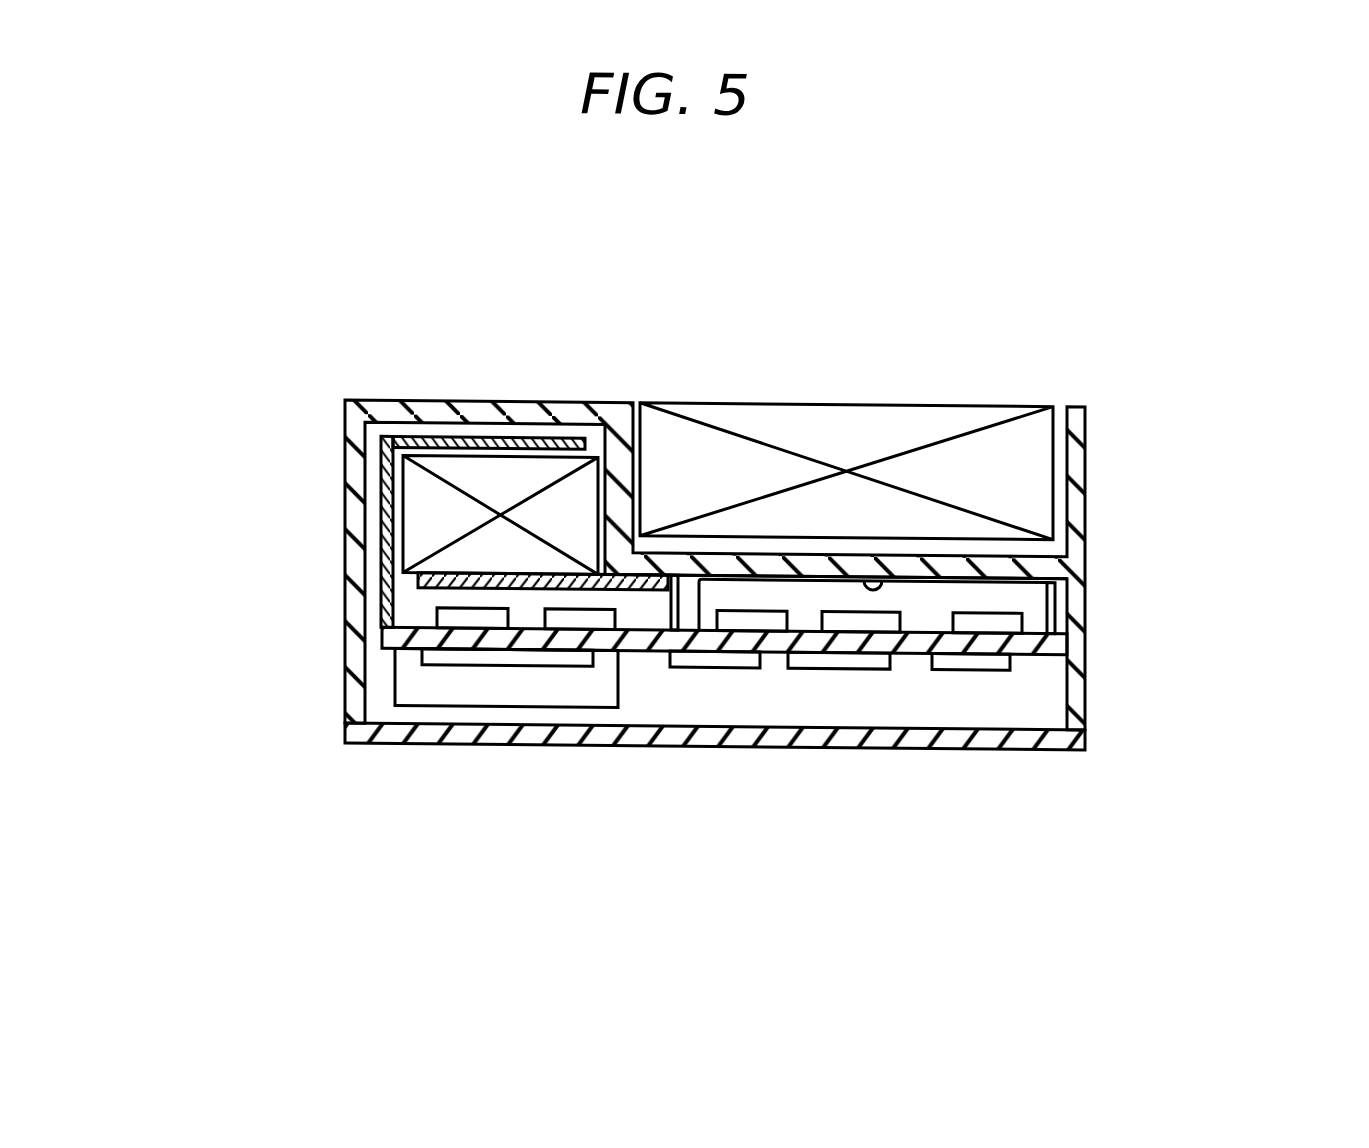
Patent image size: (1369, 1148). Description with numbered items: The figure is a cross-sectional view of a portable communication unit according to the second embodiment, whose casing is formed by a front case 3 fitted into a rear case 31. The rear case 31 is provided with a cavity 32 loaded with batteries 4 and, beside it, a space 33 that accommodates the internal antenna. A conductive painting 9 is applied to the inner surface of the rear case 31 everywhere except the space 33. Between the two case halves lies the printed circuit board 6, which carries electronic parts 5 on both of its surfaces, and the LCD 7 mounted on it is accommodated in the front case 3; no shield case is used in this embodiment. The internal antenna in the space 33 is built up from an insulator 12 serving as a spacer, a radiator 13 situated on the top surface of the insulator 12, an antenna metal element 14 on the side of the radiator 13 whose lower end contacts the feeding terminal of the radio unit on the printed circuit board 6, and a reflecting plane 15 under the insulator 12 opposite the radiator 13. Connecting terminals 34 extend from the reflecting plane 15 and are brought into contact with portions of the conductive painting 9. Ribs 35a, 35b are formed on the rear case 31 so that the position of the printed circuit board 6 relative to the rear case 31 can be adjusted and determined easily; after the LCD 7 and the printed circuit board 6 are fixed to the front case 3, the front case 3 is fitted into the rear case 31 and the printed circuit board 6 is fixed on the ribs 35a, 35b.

The front case 3 is at (1053, 735).
The batteries 4 is at (1012, 449).
The electronic parts 5 is at (547, 611).
The printed circuit board 6 is at (657, 637).
The liquid crystal display 7 is at (577, 690).
The conductive painting 9 is at (885, 571).
The insulator 12 is at (422, 481).
The radiator 13 is at (484, 434).
The antenna metal element 14 is at (380, 539).
The reflecting plate 15 is at (430, 587).
The rear case 31 is at (1085, 481).
The cavity 32 is at (635, 404).
The space 33 is at (373, 440).
The connecting terminals 34 is at (650, 573).
The rib 35a is at (690, 603).
The rib 35b is at (1057, 601).